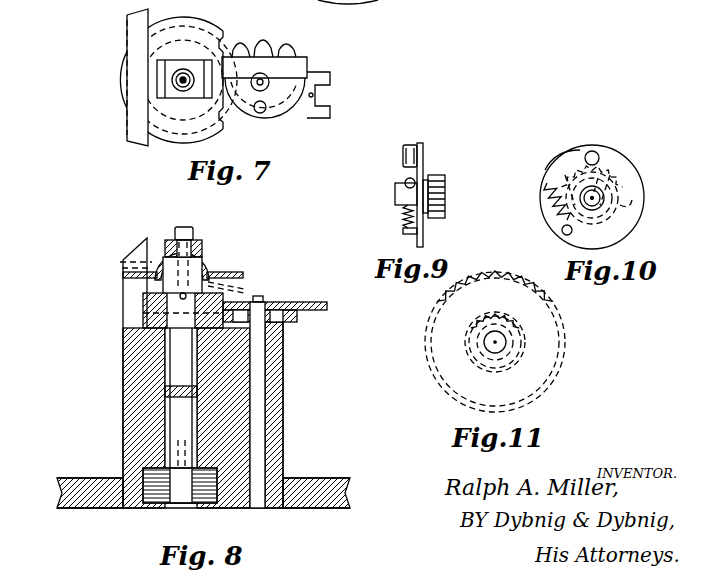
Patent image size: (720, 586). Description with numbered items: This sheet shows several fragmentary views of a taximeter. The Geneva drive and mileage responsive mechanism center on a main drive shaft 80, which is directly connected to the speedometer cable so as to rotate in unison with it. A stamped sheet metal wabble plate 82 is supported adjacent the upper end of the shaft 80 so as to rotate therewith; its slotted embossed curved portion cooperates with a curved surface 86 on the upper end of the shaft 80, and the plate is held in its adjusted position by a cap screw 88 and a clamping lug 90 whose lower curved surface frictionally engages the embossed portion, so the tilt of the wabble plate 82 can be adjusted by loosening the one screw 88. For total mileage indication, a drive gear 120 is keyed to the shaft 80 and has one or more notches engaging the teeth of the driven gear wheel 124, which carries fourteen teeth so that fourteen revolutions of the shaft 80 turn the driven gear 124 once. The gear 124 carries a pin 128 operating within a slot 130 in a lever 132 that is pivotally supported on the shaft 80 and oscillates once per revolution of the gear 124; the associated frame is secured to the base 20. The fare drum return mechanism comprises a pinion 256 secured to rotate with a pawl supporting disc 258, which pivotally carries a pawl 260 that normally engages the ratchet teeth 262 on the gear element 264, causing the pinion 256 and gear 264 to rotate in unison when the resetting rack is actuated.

In FIG. 8, the base 20 is at (316, 482).
In FIG. 8, the main drive shaft 80 is at (178, 414).
In FIG. 7, the wabble plate 82 is at (120, 78).
In FIG. 8, the wabble plate 82 is at (244, 275).
In FIG. 8, the curved surface 86 is at (196, 268).
In FIG. 8, the cap screw 88 is at (186, 230).
In FIG. 8, the clamping lug 90 is at (166, 240).
In FIG. 8, the drive gear 120 is at (143, 313).
In FIG. 8, the driven gear wheel 124 is at (303, 316).
In FIG. 7, the pin 128 is at (262, 113).
In FIG. 7, the slot 130 is at (286, 77).
In FIG. 7, the lever 132 is at (306, 118).
In FIG. 8, the lever 132 is at (313, 305).
In FIG. 9, the pinion 256 is at (438, 177).
In FIG. 10, the pinion 256 is at (602, 178).
In FIG. 9, the pawl supporting disc 258 is at (423, 234).
In FIG. 10, the pawl supporting disc 258 is at (628, 170).
In FIG. 9, the pawl 260 is at (403, 170).
In FIG. 10, the pawl 260 is at (565, 152).
In FIG. 11, the ratchet teeth 262 is at (497, 318).
In FIG. 11, the gear element 264 is at (550, 348).